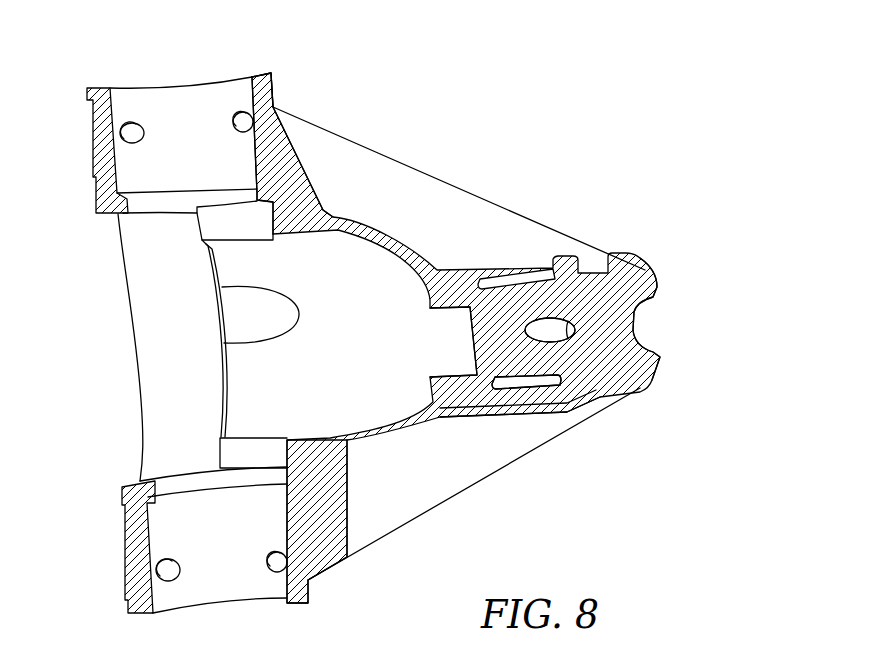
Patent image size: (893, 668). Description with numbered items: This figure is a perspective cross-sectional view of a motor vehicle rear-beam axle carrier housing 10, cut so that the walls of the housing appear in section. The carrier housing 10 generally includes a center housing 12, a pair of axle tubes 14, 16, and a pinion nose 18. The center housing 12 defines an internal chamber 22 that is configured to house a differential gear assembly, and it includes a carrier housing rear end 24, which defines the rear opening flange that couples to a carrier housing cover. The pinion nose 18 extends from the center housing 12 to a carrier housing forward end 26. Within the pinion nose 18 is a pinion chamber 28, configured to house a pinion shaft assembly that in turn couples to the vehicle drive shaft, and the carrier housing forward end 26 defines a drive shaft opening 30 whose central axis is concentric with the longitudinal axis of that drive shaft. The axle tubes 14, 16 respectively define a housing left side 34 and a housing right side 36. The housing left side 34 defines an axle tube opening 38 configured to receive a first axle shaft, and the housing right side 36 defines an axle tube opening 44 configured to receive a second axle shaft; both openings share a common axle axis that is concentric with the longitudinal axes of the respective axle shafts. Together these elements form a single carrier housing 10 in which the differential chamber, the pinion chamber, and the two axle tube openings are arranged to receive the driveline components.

The axle carrier housing 10 is at (540, 178).
The center housing 12 is at (393, 443).
The axle tube 14 is at (261, 122).
The axle tube 16 is at (290, 523).
The pinion nose 18 is at (525, 400).
The internal chamber 22 is at (350, 292).
The carrier housing rear end 24 is at (133, 345).
The carrier housing forward end 26 is at (653, 327).
The pinion chamber 28 is at (592, 329).
The drive shaft opening 30 is at (150, 88).
The housing left side 34 is at (277, 72).
The housing right side 36 is at (155, 612).
The axle tube opening 38 is at (204, 106).
The axle tube opening 44 is at (228, 602).